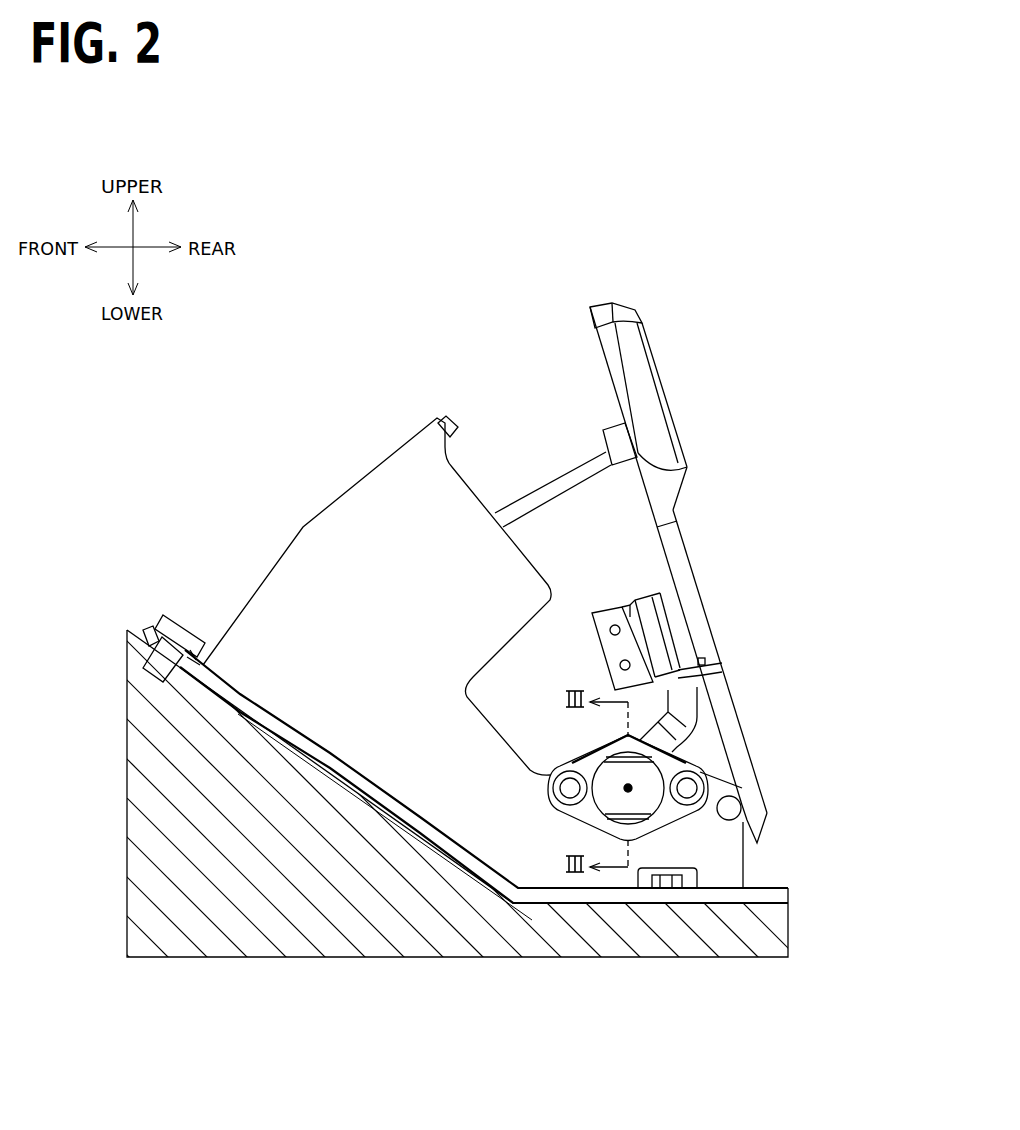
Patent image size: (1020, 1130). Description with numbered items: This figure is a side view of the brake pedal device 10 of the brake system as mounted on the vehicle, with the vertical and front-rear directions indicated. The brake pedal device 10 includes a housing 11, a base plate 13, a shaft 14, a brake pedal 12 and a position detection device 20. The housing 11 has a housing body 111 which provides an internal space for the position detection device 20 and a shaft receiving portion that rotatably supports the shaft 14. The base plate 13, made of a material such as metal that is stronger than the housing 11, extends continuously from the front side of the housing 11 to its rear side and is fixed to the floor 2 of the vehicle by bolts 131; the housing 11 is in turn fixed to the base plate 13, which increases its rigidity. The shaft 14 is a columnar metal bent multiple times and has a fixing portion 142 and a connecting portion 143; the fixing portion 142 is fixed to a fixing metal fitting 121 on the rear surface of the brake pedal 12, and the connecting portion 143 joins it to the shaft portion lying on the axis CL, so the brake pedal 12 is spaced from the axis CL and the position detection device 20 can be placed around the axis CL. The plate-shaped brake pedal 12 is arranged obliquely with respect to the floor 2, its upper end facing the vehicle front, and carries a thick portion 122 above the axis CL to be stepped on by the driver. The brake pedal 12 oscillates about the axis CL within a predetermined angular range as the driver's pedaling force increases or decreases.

The brake pedal device 10 is at (333, 305).
The floor 2 is at (248, 930).
The base plate 13 is at (392, 807).
The bolt 131 is at (185, 640).
The housing 11 is at (335, 548).
The housing body 111 is at (318, 472).
The brake pedal 12 is at (678, 535).
The thick portion 122 is at (657, 363).
The fixing metal fitting 121 is at (670, 615).
The shaft 14 is at (745, 679).
The fixing portion 142 is at (680, 680).
The connecting portion 143 is at (670, 757).
The position detection device 20 is at (588, 808).
The axis CL is at (628, 790).